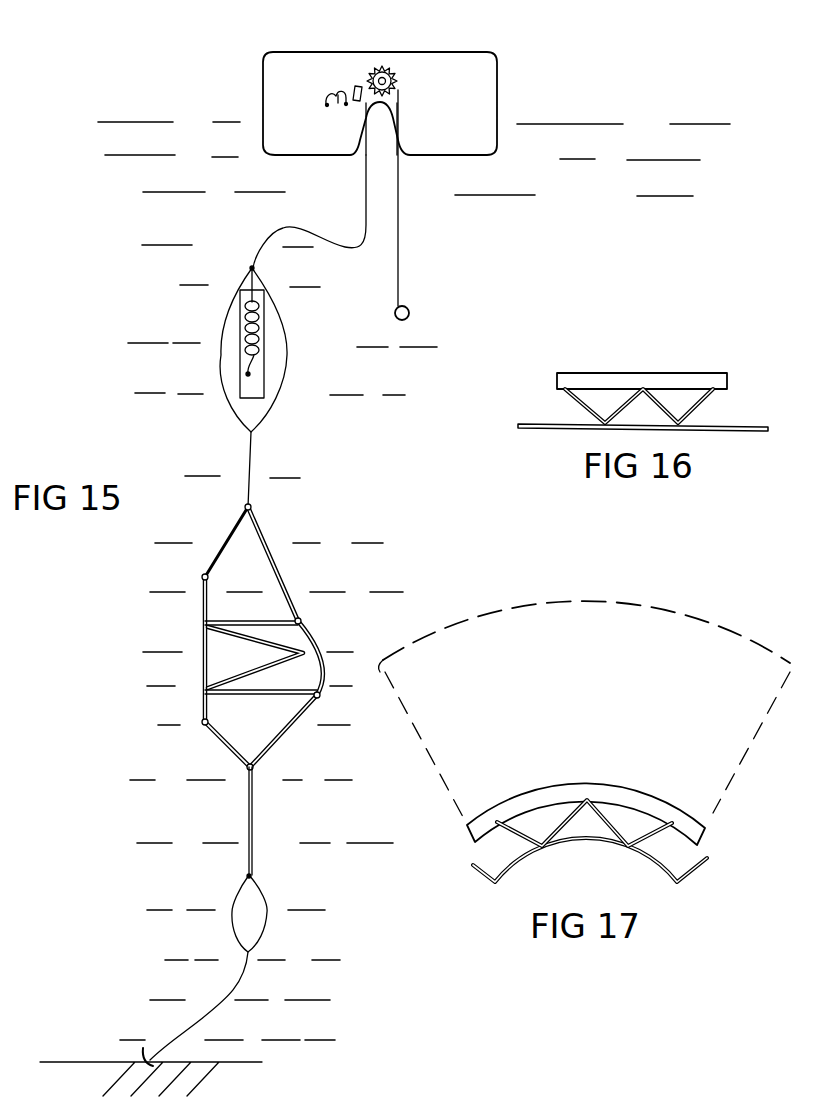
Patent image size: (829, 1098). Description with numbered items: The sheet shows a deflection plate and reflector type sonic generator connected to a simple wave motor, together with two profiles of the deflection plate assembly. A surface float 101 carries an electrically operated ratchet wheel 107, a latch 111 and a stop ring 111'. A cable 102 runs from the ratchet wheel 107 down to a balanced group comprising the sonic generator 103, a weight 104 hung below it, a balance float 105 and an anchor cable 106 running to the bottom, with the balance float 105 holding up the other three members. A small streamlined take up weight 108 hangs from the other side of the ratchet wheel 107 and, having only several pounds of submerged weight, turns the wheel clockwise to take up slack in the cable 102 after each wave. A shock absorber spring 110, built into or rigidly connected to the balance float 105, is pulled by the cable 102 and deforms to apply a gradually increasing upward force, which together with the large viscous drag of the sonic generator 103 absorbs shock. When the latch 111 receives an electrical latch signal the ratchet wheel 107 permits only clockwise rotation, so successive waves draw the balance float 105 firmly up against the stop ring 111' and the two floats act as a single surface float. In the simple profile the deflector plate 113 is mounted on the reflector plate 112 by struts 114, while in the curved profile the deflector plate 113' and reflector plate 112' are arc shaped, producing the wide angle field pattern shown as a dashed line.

In FIG. 15, the float 101 is at (457, 53).
In FIG. 15, the cable 102 is at (363, 243).
In FIG. 15, the sonic generator 103 is at (312, 633).
In FIG. 15, the weight 104 is at (266, 912).
In FIG. 15, the balance float 105 is at (285, 326).
In FIG. 15, the anchor cable 106 is at (217, 1008).
In FIG. 15, the ratchet wheel 107 is at (378, 62).
In FIG. 15, the take up weight 108 is at (417, 319).
In FIG. 15, the shock absorber spring 110 is at (256, 349).
In FIG. 15, the latch 111 is at (333, 86).
In FIG. 15, the stop ring 111' is at (389, 129).
In FIG. 16, the reflector plate 112 is at (660, 412).
In FIG. 17, the reflector plate 112' is at (590, 870).
In FIG. 16, the deflector plate 113 is at (646, 363).
In FIG. 17, the deflector plate 113' is at (588, 801).
In FIG. 16, the struts 114 is at (573, 398).
In FIG. 17, the struts 114 is at (522, 843).